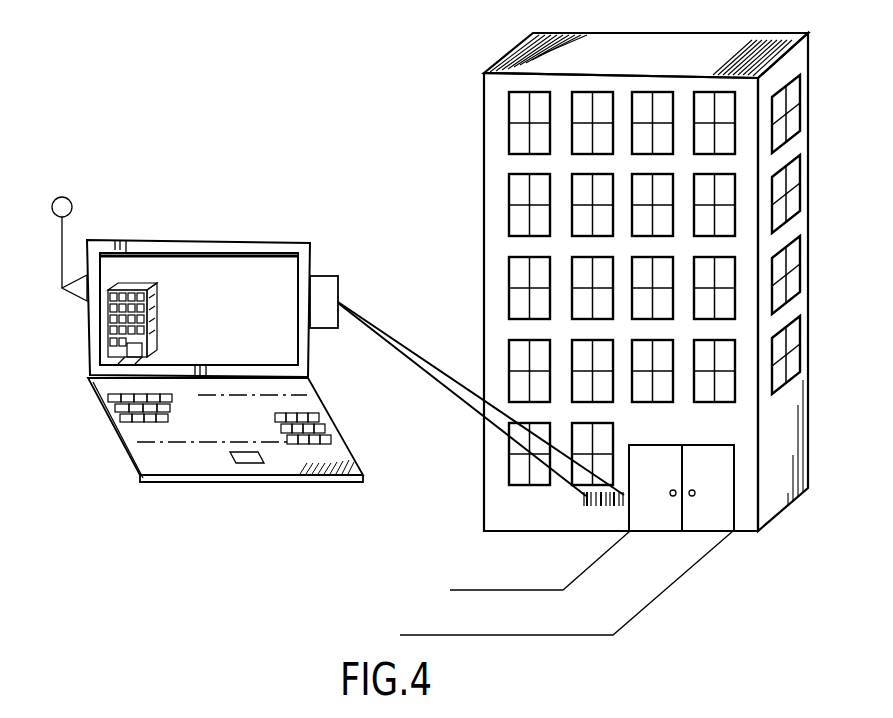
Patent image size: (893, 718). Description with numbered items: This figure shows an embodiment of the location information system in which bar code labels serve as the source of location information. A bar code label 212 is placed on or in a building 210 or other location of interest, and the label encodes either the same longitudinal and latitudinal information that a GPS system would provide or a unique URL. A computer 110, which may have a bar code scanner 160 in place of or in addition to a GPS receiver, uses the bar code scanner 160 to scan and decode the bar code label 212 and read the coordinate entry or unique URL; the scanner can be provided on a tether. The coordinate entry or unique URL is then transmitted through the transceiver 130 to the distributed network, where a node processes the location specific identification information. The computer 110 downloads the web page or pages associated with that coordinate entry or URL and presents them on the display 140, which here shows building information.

The computer 110 is at (103, 412).
The transceiver 130 is at (76, 297).
The display 140 is at (287, 343).
The bar code scanner 160 is at (323, 277).
The building 210 is at (503, 532).
The bar code label 212 is at (600, 506).